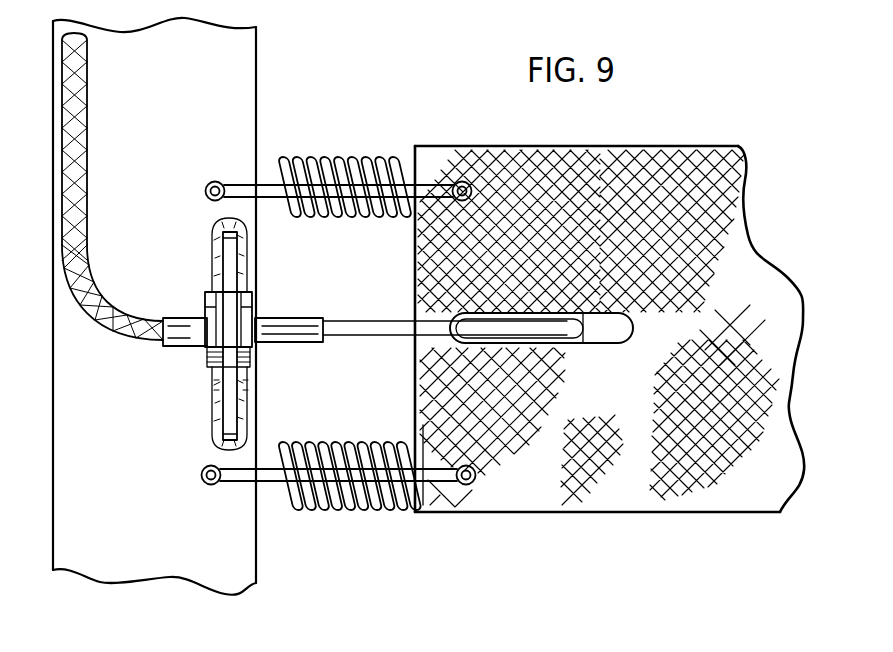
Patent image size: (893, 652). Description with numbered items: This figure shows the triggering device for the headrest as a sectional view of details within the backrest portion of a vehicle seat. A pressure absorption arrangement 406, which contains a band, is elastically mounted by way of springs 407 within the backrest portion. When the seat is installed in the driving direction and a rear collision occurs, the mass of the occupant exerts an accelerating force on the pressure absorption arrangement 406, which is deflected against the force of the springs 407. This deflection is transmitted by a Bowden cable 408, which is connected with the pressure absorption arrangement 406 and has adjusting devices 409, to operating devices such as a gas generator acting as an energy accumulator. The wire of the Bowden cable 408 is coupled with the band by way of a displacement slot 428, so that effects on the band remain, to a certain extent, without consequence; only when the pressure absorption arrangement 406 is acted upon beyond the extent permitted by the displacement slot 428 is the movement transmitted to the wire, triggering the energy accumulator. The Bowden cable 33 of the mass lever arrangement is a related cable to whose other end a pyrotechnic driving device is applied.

The Bowden cable 33 is at (333, 319).
The pressure absorption arrangement 406 is at (728, 492).
The springs 407 is at (322, 157).
The Bowden cable 408 is at (362, 350).
The adjusting devices 409 is at (208, 367).
The displacement slot 428 is at (615, 323).